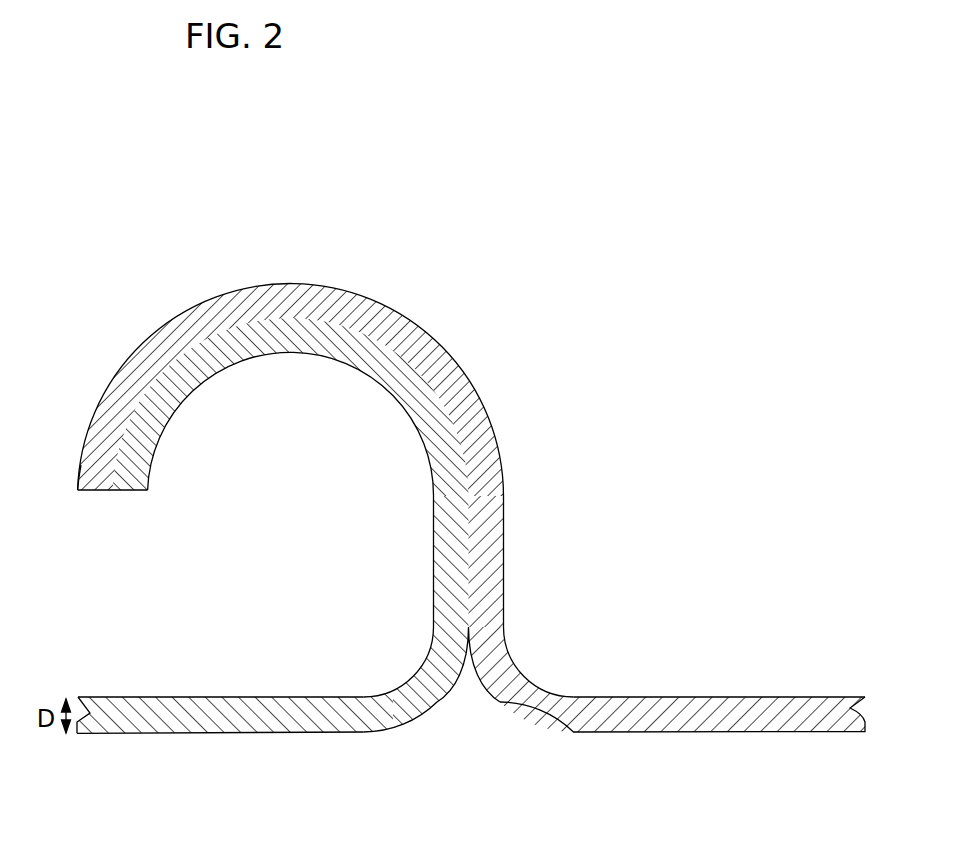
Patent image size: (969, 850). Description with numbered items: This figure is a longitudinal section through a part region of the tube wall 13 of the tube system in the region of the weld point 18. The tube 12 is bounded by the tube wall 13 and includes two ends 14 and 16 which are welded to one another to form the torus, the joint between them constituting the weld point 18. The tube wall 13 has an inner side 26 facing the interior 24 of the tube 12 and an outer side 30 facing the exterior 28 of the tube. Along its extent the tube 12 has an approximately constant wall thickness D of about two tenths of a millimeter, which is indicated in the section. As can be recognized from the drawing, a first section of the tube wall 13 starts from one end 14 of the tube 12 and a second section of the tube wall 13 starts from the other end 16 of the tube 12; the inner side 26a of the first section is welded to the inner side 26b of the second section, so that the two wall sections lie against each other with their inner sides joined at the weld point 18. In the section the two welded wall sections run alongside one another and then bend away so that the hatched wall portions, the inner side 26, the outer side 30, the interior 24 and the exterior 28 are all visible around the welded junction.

The tube 12 is at (287, 696).
The tube wall 13 is at (288, 734).
The end 14 is at (128, 492).
The end 16 is at (93, 490).
The weld point 18 is at (478, 347).
The interior 24 is at (723, 777).
The inner side 26 is at (437, 703).
The inner side of first section 26a is at (469, 560).
The inner side of second section 26b is at (469, 516).
The exterior 28 is at (725, 625).
The outer side 30 is at (138, 698).